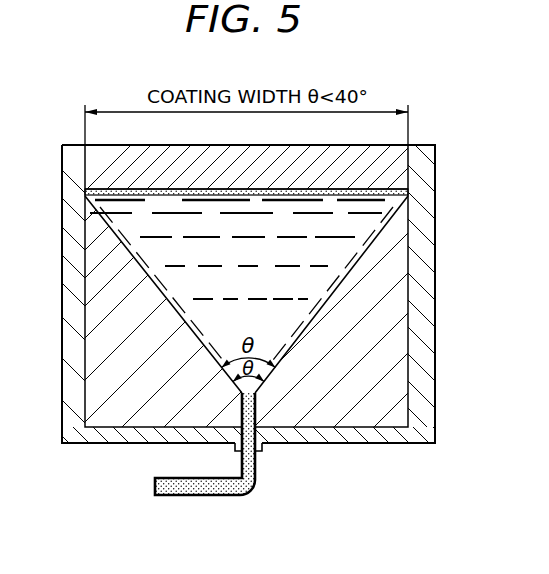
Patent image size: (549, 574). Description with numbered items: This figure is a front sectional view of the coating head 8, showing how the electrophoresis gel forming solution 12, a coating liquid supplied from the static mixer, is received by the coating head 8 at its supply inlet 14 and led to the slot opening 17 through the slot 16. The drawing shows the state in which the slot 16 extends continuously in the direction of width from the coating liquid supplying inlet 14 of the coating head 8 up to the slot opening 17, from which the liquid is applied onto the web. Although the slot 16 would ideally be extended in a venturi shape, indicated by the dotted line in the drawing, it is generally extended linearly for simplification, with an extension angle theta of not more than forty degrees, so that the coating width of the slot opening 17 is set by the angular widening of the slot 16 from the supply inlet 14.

The coating head 8 is at (365, 415).
The electrophoresis gel forming solution 12 is at (252, 488).
The supply inlet 14 is at (263, 449).
The slot 16 is at (317, 292).
The slot opening 17 is at (353, 184).